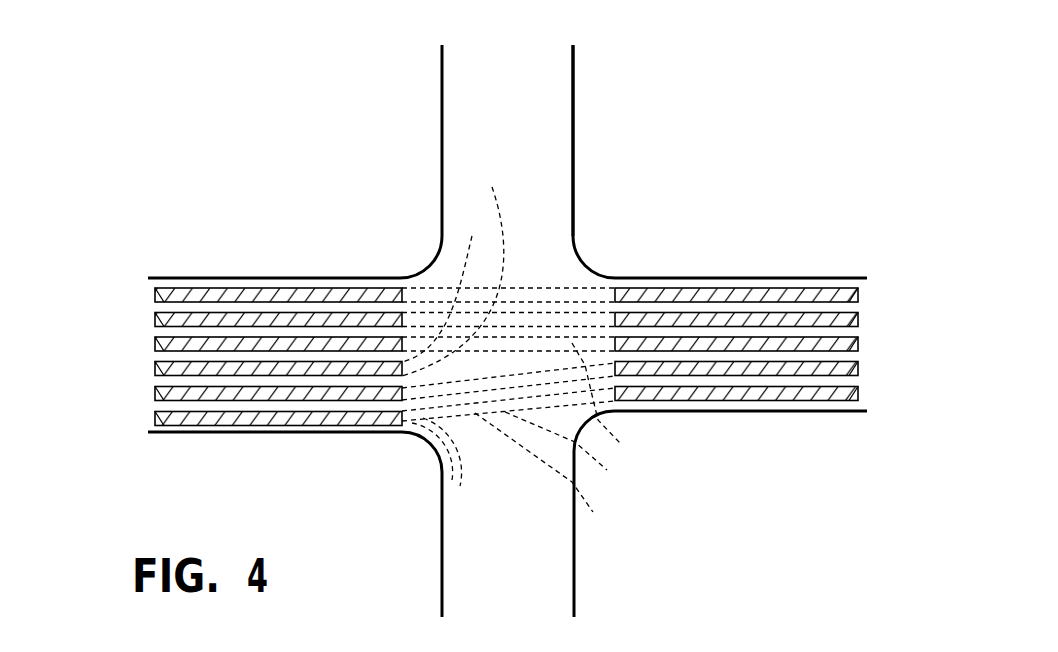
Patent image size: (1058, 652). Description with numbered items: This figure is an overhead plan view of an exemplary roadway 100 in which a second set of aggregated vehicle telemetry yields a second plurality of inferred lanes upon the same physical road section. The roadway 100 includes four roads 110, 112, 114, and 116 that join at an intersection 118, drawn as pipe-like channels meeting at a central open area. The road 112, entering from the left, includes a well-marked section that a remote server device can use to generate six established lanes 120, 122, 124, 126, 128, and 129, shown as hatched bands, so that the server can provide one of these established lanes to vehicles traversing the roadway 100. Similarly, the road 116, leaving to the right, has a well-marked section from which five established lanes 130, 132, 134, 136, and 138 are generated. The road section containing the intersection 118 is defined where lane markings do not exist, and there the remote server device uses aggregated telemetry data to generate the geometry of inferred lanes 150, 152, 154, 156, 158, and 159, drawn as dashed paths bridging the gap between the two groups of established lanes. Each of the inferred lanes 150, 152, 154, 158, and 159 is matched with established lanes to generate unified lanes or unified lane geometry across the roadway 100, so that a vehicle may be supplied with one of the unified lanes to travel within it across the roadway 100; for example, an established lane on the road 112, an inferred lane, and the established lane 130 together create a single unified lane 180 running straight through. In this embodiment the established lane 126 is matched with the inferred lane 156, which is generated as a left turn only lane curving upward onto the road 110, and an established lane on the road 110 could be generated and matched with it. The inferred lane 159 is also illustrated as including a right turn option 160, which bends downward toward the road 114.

The roadway 100 is at (557, 105).
The road 110 is at (557, 148).
The road 112 is at (267, 278).
The road 114 is at (547, 552).
The road 116 is at (715, 411).
The intersection 118 is at (543, 262).
The established lane 120 is at (155, 296).
The established lane 122 is at (155, 320).
The established lane 124 is at (155, 346).
The established lane 126 is at (155, 366).
The established lane 128 is at (155, 392).
The established lane 129 is at (155, 414).
The established lane 130 is at (857, 295).
The established lane 132 is at (857, 320).
The established lane 134 is at (857, 345).
The established lane 136 is at (857, 367).
The established lane 138 is at (857, 393).
The inferred lane 150 is at (422, 285).
The inferred lane 152 is at (444, 290).
The inferred lane 154 is at (529, 400).
The inferred lane 156 is at (458, 271).
The inferred lane 158 is at (567, 455).
The inferred lane 159 is at (545, 476).
The right turn option 160 is at (433, 450).
The unified lane 180 is at (697, 287).